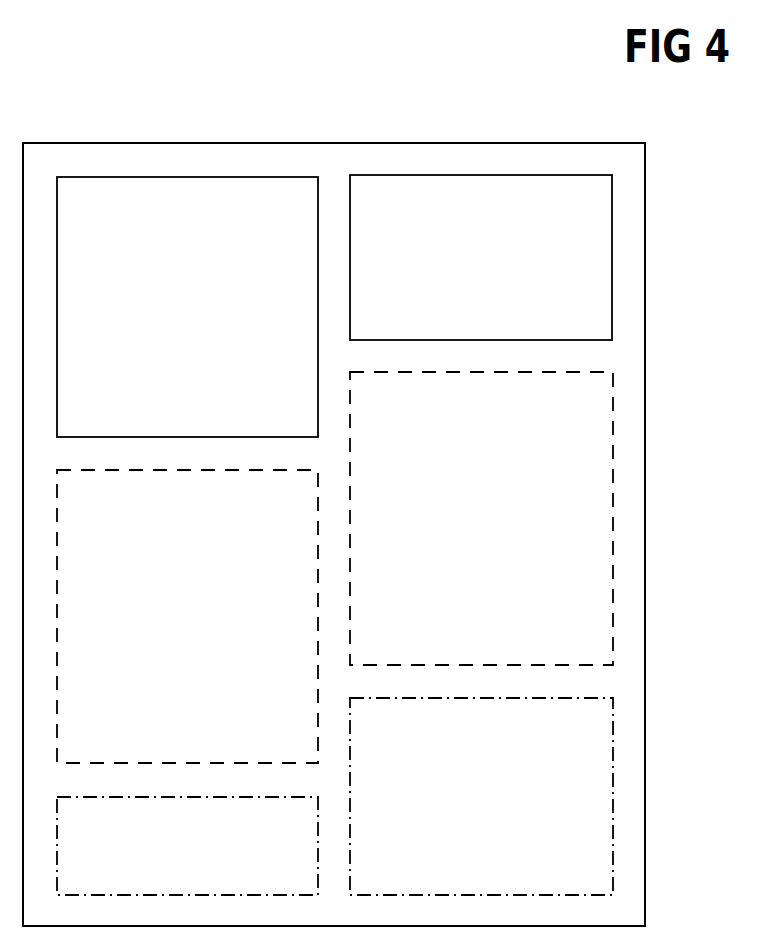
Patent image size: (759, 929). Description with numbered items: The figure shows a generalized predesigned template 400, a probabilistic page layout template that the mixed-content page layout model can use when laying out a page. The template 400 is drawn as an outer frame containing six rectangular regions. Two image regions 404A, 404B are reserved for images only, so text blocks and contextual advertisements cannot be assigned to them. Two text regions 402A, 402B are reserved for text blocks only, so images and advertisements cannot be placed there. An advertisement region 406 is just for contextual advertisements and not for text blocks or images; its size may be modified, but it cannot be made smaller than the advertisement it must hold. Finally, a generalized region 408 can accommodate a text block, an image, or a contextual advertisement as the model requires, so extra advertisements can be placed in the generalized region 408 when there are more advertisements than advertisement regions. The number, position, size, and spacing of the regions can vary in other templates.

The generalized predesigned template 400 is at (78, 143).
The image region 404A is at (310, 206).
The image region 404B is at (603, 206).
The text region 402A is at (310, 501).
The text region 402B is at (603, 401).
The advertisement region 406 is at (310, 826).
The generalized region 408 is at (603, 730).